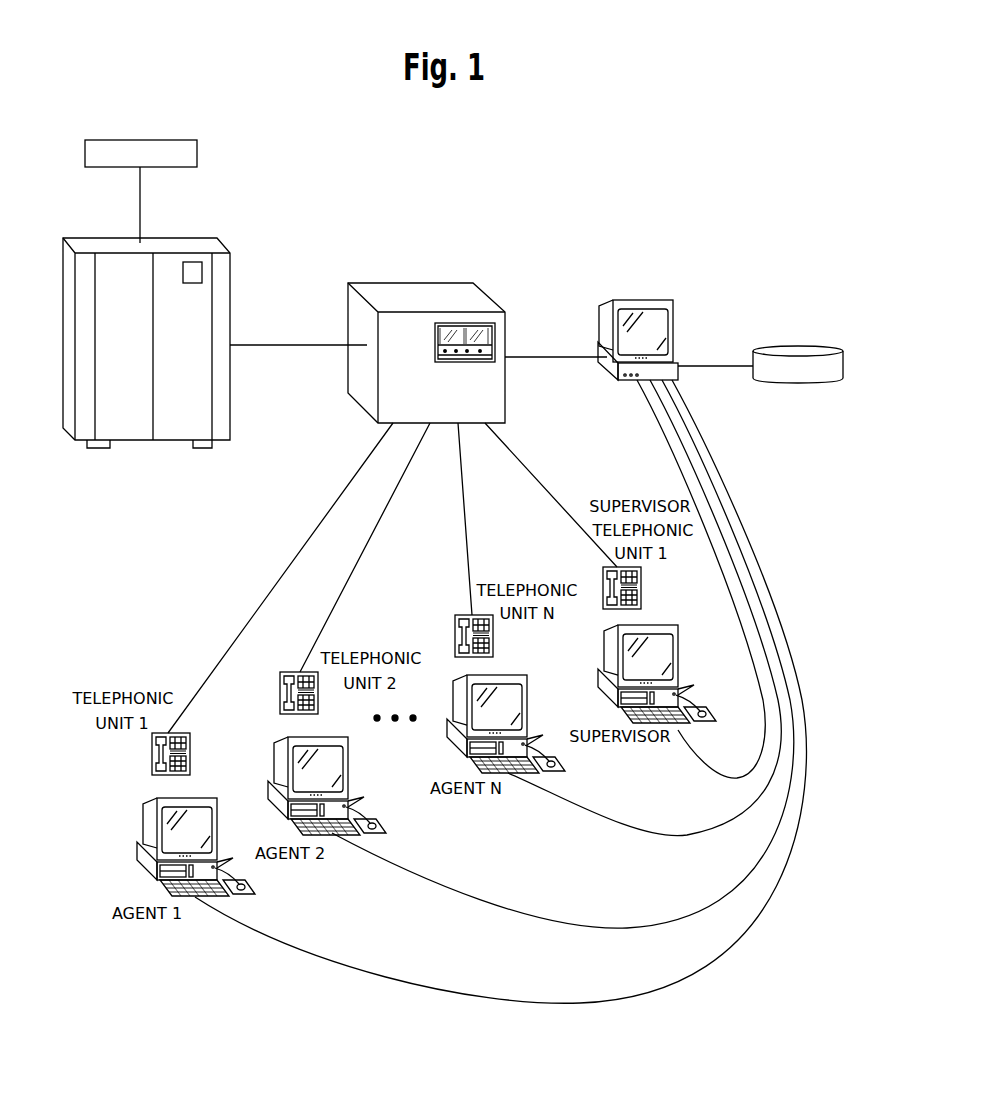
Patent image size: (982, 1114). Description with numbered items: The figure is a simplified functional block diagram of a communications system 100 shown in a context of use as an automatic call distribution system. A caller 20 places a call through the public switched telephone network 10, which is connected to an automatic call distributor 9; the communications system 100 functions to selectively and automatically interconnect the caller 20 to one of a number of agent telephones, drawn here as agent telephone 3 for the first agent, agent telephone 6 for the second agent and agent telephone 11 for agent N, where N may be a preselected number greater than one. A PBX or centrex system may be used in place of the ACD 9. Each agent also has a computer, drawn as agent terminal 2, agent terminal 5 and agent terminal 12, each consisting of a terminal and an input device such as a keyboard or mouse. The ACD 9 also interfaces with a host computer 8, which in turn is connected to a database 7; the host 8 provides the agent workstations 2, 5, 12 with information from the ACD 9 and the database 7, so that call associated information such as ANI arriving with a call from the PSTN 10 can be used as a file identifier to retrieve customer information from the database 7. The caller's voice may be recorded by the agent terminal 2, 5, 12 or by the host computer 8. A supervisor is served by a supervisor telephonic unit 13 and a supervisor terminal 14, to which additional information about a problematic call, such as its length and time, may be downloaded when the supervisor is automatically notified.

The communications system 100 is at (585, 163).
The caller 20 is at (157, 139).
The public switched telephone network 10 is at (213, 247).
The automatic call distributor 9 is at (450, 292).
The host computer 8 is at (610, 302).
The database 7 is at (810, 347).
The supervisor telephonic unit 13 is at (603, 578).
The supervisor terminal 14 is at (665, 625).
The agent telephone N 11 is at (460, 614).
The agent terminal N 12 is at (510, 675).
The agent telephone 2 6 is at (290, 672).
The agent terminal 2 5 is at (350, 760).
The agent telephone 1 3 is at (190, 739).
The agent terminal 1 2 is at (198, 803).